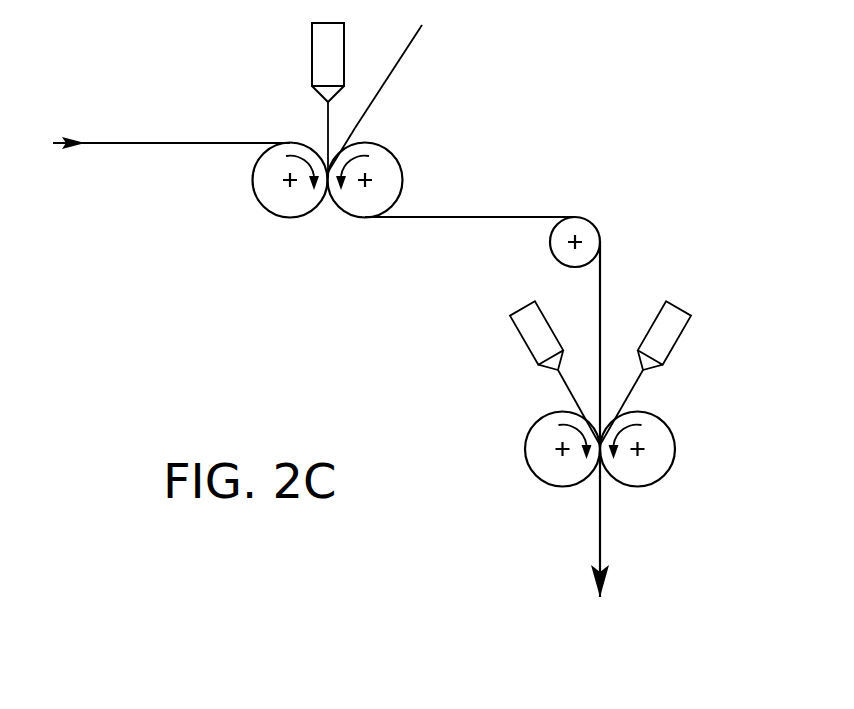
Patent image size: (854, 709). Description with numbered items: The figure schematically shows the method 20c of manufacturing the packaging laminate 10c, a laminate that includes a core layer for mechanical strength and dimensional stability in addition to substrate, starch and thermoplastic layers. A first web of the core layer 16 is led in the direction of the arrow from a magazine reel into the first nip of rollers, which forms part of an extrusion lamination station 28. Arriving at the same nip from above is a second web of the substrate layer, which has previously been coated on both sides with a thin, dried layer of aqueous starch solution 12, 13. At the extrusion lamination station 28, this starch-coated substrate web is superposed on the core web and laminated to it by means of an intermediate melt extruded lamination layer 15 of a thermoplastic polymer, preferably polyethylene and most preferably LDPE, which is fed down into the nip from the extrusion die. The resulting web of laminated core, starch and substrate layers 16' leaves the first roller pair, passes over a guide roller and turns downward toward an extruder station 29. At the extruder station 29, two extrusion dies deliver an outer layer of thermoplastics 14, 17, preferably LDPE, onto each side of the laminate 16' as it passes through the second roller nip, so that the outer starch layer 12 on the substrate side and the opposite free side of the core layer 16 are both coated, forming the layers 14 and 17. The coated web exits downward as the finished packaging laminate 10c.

The packaging laminate 10c is at (634, 518).
The aqueous starch solution layer 12 is at (367, 98).
The aqueous starch solution layer 13 is at (346, 121).
The outer layer of thermoplastics 14 is at (647, 407).
The melt extruded lamination layer 15 is at (322, 130).
The first web of the core layer 16 is at (171, 129).
The web of laminated core, starch and substrate layers 16' is at (482, 311).
The outer layer of thermoplastics 17 is at (555, 373).
The method of manufacturing 20c is at (739, 173).
The extrusion lamination station 28 is at (316, 58).
The extruder station 29 is at (682, 339).